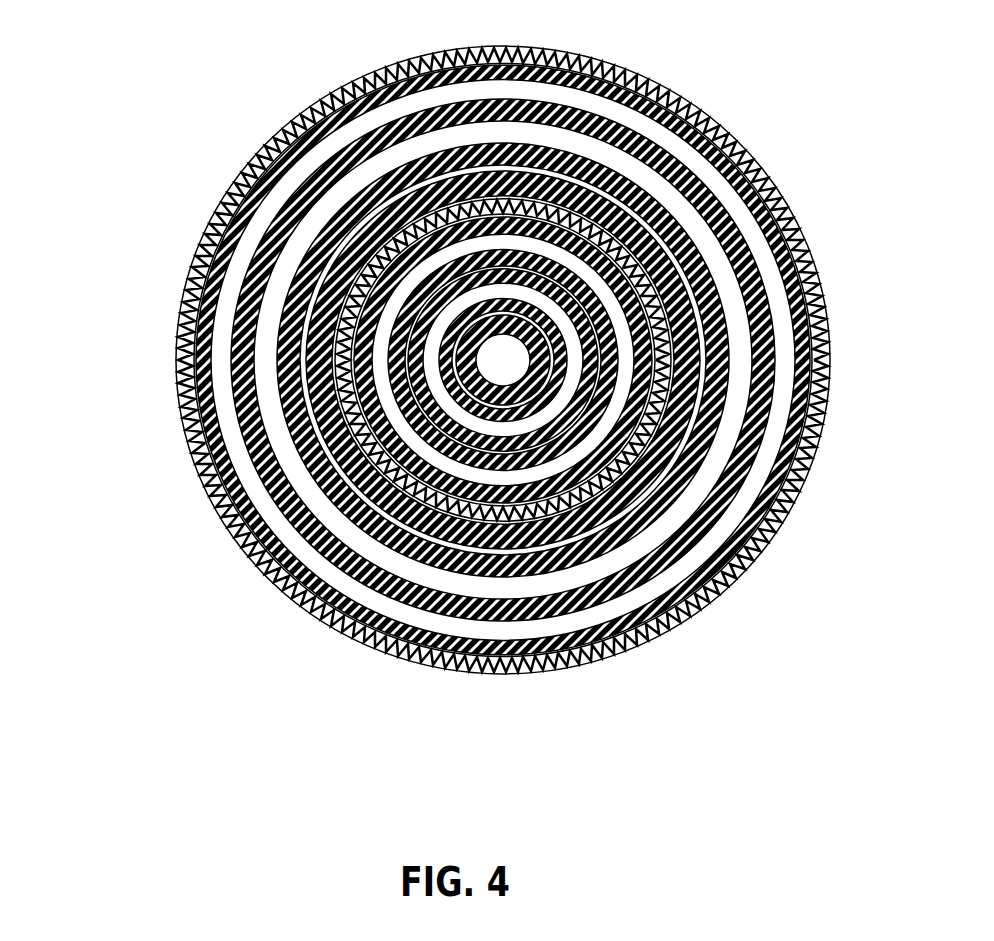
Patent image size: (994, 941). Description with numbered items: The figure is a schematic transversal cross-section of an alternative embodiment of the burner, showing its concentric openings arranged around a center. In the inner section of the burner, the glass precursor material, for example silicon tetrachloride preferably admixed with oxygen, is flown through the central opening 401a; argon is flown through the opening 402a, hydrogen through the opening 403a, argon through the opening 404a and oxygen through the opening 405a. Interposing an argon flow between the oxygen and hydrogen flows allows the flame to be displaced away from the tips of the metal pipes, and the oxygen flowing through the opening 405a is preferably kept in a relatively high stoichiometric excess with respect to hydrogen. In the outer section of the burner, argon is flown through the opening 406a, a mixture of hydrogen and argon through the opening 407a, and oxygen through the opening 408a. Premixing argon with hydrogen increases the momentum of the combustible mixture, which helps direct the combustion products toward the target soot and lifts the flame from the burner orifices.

The central opening 401a is at (513, 380).
The opening 402a is at (437, 400).
The opening 403a is at (283, 592).
The opening 404a is at (357, 440).
The opening 405a is at (380, 362).
The opening 406a is at (300, 323).
The opening 407a is at (297, 250).
The opening 408a is at (307, 167).